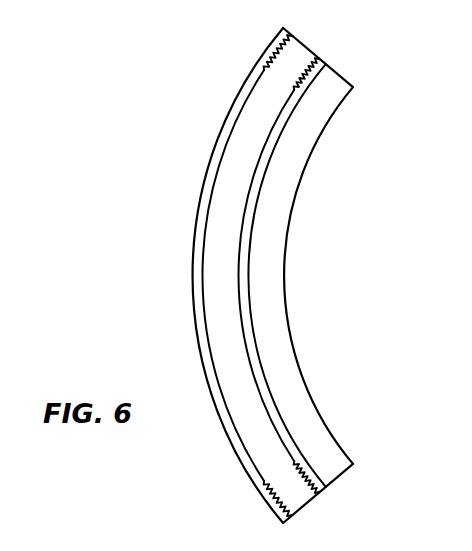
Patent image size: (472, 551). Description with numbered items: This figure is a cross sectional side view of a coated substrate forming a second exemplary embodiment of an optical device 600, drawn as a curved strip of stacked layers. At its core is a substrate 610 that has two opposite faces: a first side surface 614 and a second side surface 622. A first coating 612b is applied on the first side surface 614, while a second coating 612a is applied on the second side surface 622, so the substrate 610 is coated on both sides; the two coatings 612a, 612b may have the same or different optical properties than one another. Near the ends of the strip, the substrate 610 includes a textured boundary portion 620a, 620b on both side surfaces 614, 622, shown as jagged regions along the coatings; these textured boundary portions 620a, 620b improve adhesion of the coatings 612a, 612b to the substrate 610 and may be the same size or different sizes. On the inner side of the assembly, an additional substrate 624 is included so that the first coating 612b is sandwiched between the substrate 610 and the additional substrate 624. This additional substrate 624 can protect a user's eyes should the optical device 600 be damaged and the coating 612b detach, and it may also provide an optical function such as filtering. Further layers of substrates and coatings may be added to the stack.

The optical device 600 is at (170, 105).
The substrate 610 is at (220, 277).
The second coating 612a is at (222, 172).
The first coating 612b is at (250, 263).
The first side surface 614 is at (255, 372).
The textured boundary portion 620a is at (277, 54).
The textured boundary portion 620b is at (302, 78).
The second side surface 622 is at (192, 310).
The additional substrate 624 is at (267, 330).